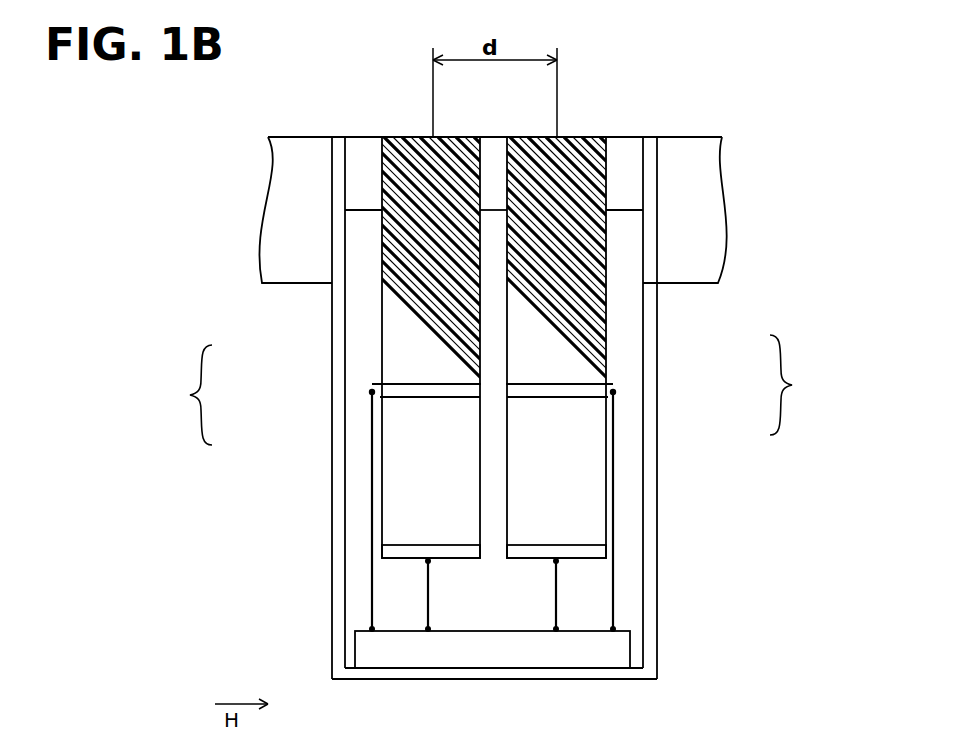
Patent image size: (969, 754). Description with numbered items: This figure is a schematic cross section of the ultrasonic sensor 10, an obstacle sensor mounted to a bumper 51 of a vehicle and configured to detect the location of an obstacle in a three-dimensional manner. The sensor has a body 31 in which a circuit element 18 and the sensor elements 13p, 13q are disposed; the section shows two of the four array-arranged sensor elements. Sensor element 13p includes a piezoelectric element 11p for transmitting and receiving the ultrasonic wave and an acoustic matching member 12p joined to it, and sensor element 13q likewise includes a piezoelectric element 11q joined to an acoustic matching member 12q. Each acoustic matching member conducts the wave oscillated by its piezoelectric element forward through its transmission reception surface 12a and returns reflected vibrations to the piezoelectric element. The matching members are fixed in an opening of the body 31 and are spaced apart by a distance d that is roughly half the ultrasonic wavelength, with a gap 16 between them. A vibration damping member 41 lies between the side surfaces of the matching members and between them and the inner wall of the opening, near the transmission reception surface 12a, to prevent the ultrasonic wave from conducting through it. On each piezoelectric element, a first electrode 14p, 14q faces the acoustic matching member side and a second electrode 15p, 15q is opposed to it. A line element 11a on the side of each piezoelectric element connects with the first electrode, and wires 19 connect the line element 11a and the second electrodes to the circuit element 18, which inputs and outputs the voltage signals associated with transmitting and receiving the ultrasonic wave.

The ultrasonic sensor 10 is at (713, 110).
The bumper 51 is at (293, 141).
The vibration damping member 41 is at (357, 145).
The transmission reception surface 12a is at (406, 139).
The slit 16 is at (498, 312).
The acoustic matching member 12p is at (381, 345).
The acoustic matching member 12q is at (598, 338).
The line element 11a is at (370, 392).
The piezoelectric element 11p is at (392, 409).
The piezoelectric element 11q is at (595, 410).
The sensor element 13p is at (171, 395).
The sensor element 13q is at (806, 385).
The first electrode 14p is at (442, 392).
The first electrode 14q is at (553, 392).
The second electrode 15p is at (395, 552).
The second electrode 15q is at (597, 553).
The wire 19 is at (370, 592).
The circuit element 18 is at (373, 650).
The body 31 is at (650, 650).